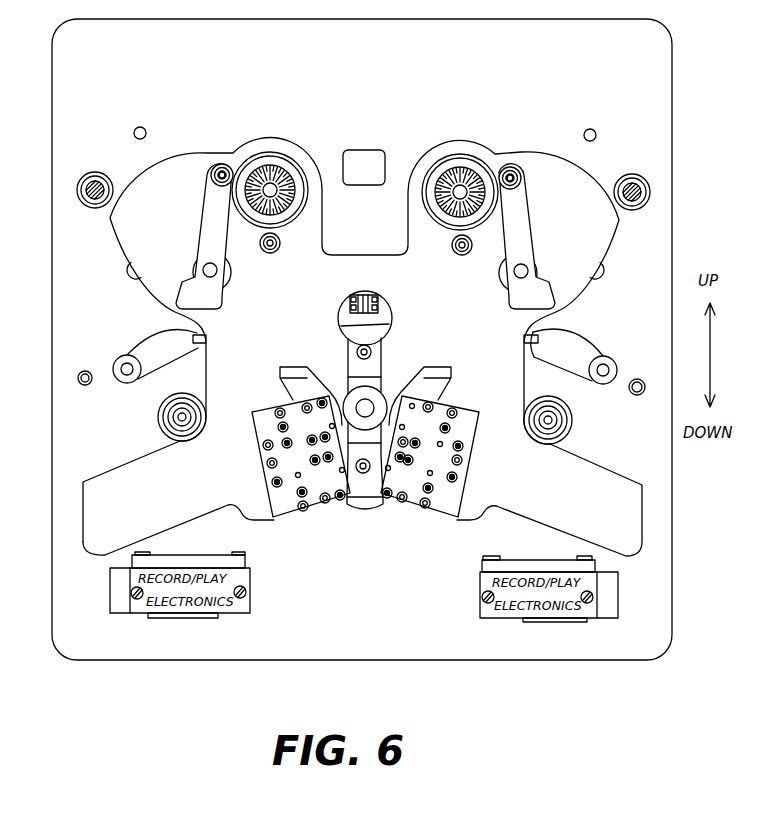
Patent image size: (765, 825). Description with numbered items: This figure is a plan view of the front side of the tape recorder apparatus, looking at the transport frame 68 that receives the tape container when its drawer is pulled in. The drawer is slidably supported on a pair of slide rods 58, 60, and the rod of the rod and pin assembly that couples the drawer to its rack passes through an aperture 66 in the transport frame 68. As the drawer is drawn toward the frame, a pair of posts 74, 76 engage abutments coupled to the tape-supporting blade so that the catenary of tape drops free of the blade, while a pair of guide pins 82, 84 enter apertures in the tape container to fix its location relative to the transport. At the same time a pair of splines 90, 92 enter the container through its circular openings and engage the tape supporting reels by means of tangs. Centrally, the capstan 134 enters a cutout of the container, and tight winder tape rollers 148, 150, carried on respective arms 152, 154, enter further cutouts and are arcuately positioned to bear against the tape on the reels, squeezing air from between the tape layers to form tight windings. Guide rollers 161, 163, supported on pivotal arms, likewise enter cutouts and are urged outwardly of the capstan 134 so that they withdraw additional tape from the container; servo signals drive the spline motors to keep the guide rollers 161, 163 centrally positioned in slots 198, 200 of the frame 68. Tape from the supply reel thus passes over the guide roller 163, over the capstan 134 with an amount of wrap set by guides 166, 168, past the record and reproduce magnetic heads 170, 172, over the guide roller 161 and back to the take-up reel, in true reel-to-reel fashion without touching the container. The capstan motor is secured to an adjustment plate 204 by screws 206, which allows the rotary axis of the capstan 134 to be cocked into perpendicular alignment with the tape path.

The slide rod 58 is at (635, 205).
The slide rod 60 is at (93, 171).
The aperture 66 is at (363, 151).
The transport frame 68 is at (68, 553).
The post 74 is at (635, 396).
The post 76 is at (80, 372).
The guide pin 82 is at (145, 127).
The guide pin 84 is at (596, 130).
The spline 90 is at (267, 152).
The spline 92 is at (472, 167).
The capstan 134 is at (374, 398).
The tight winder tape roller 148 is at (521, 176).
The tight winder tape roller 150 is at (210, 152).
The arm 152 is at (524, 227).
The arm 154 is at (224, 243).
The guide roller 161 is at (603, 365).
The guide roller 163 is at (126, 356).
The guide 166 is at (298, 365).
The guide 168 is at (440, 368).
The record and reproduce magnetic head 170 is at (317, 507).
The record and reproduce magnetic head 172 is at (405, 502).
The slot 198 is at (572, 328).
The slot 200 is at (157, 358).
The adjustment plate 204 is at (352, 327).
The screw 206 is at (373, 347).